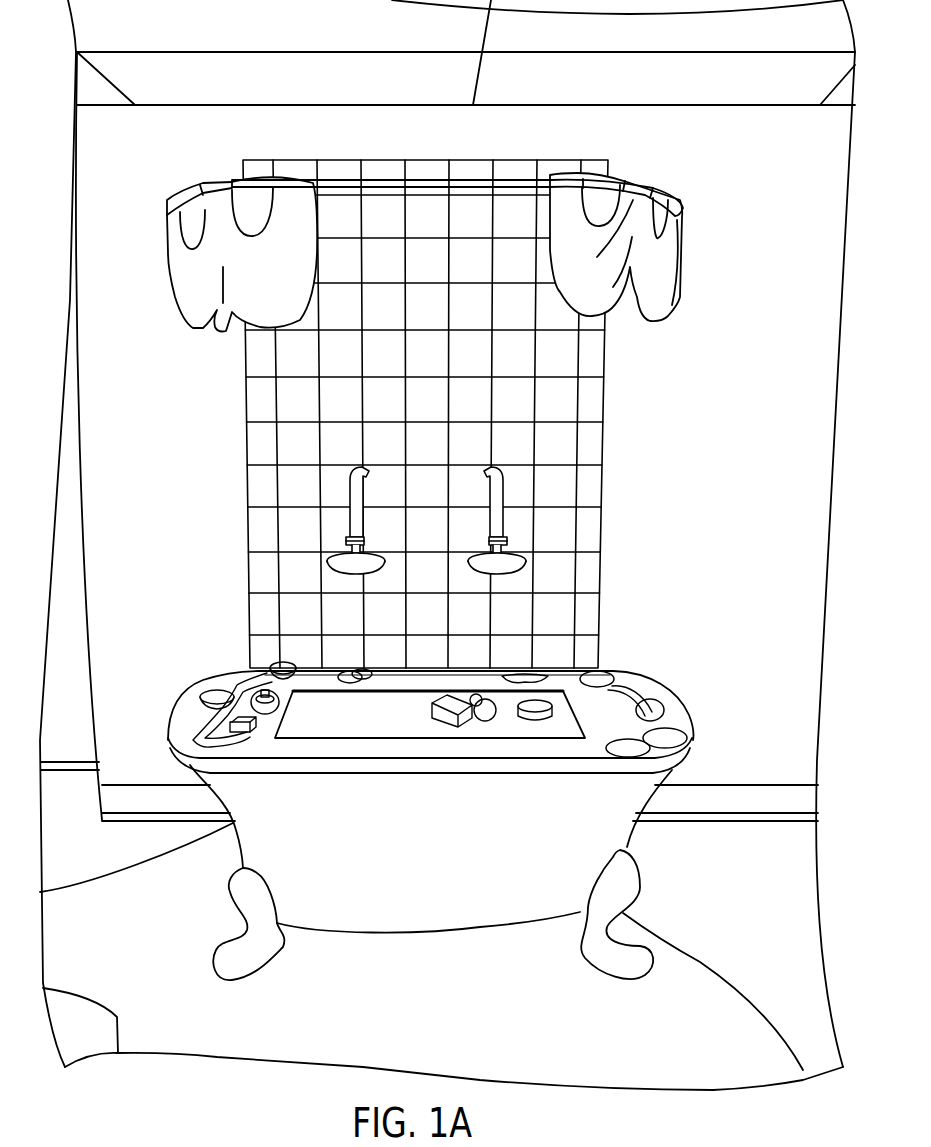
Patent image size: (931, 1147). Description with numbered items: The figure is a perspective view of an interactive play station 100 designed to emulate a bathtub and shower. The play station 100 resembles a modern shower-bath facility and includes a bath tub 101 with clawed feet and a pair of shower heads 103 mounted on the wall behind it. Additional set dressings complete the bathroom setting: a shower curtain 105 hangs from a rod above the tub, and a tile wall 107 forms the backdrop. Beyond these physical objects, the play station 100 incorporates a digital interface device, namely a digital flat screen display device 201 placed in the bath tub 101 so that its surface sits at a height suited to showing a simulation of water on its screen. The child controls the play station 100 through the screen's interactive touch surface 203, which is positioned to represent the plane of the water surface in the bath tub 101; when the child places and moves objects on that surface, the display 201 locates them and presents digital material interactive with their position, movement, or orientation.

The interactive play station 100 is at (650, 652).
The bath tub 101 is at (672, 720).
The shower heads 103 is at (325, 558).
The shower curtain 105 is at (662, 277).
The tile wall 107 is at (250, 457).
The digital flat screen display device 201 is at (593, 693).
The interactive touch surface 203 is at (298, 705).